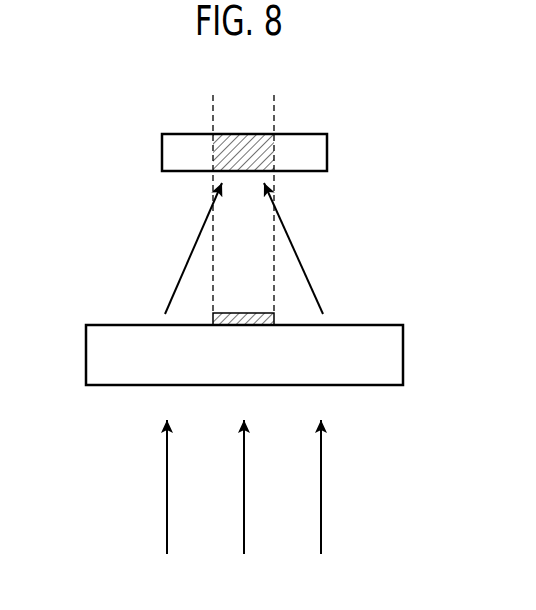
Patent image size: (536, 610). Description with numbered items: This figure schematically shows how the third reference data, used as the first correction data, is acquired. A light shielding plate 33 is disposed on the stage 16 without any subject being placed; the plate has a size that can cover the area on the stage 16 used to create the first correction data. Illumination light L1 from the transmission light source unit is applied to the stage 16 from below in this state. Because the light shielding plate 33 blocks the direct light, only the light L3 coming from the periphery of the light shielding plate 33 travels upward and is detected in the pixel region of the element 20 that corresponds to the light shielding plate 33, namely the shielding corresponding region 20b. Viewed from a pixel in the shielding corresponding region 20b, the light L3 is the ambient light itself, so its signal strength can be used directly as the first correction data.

The imaging element 20 is at (327, 145).
The shielding corresponding region 20b is at (243, 140).
The light L3 is at (197, 242).
The light shielding plate 33 is at (243, 313).
The stage 16 is at (396, 353).
The illumination light L1 is at (322, 508).